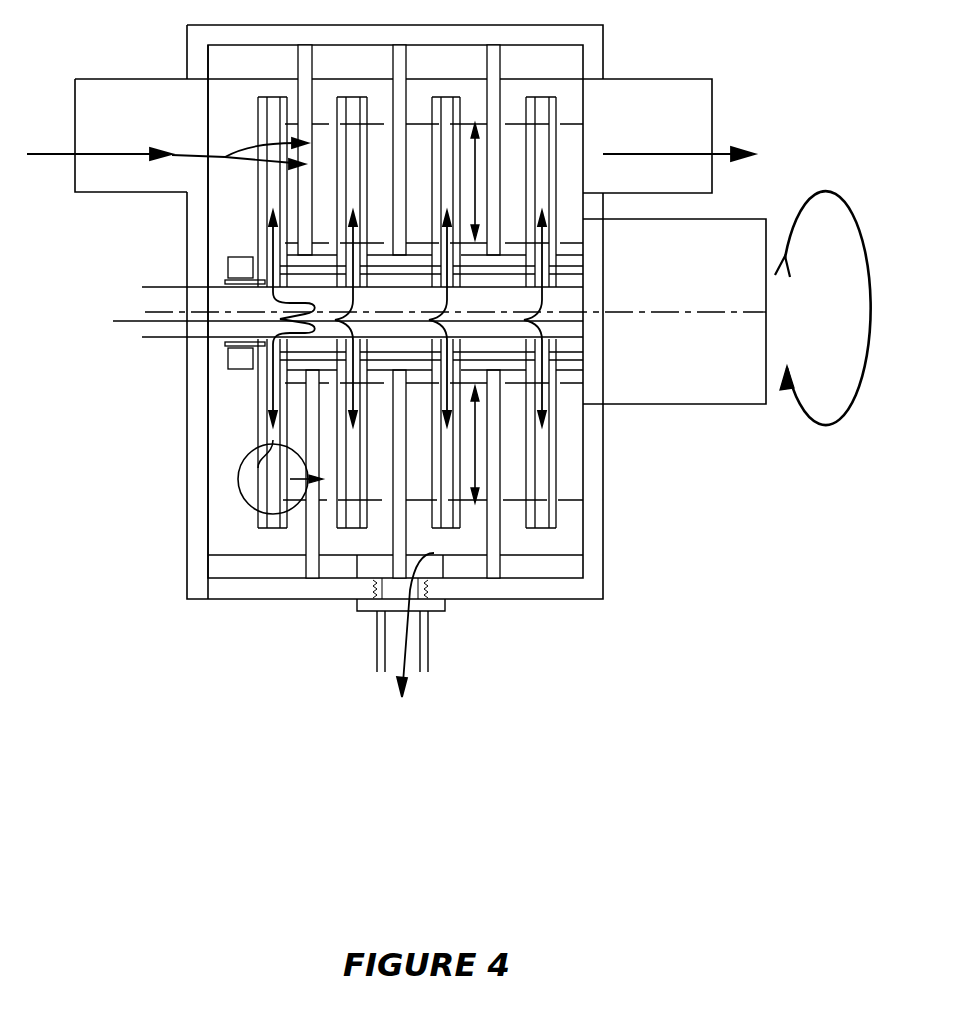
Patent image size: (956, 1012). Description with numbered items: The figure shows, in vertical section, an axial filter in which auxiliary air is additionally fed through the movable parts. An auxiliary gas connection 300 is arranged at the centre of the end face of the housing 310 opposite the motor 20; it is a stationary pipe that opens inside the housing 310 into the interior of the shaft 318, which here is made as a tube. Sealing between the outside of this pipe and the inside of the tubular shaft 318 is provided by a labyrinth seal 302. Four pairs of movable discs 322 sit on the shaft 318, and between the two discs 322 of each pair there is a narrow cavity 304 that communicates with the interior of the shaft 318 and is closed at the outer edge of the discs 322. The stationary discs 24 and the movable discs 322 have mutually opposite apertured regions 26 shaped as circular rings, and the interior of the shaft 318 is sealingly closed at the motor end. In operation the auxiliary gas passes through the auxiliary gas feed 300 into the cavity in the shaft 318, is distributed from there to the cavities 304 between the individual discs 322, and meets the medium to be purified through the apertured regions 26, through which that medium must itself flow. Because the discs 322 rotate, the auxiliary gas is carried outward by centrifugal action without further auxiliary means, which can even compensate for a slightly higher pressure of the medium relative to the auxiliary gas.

The motor 20 is at (677, 405).
The stationary discs 24 is at (500, 553).
The apertured regions 26 is at (478, 460).
The auxiliary gas connection 300 is at (170, 287).
The labyrinth seal 302 is at (253, 342).
The cavity 304 is at (273, 523).
The housing 310 is at (517, 602).
The shaft 318 is at (330, 333).
The movable discs 322 is at (257, 510).